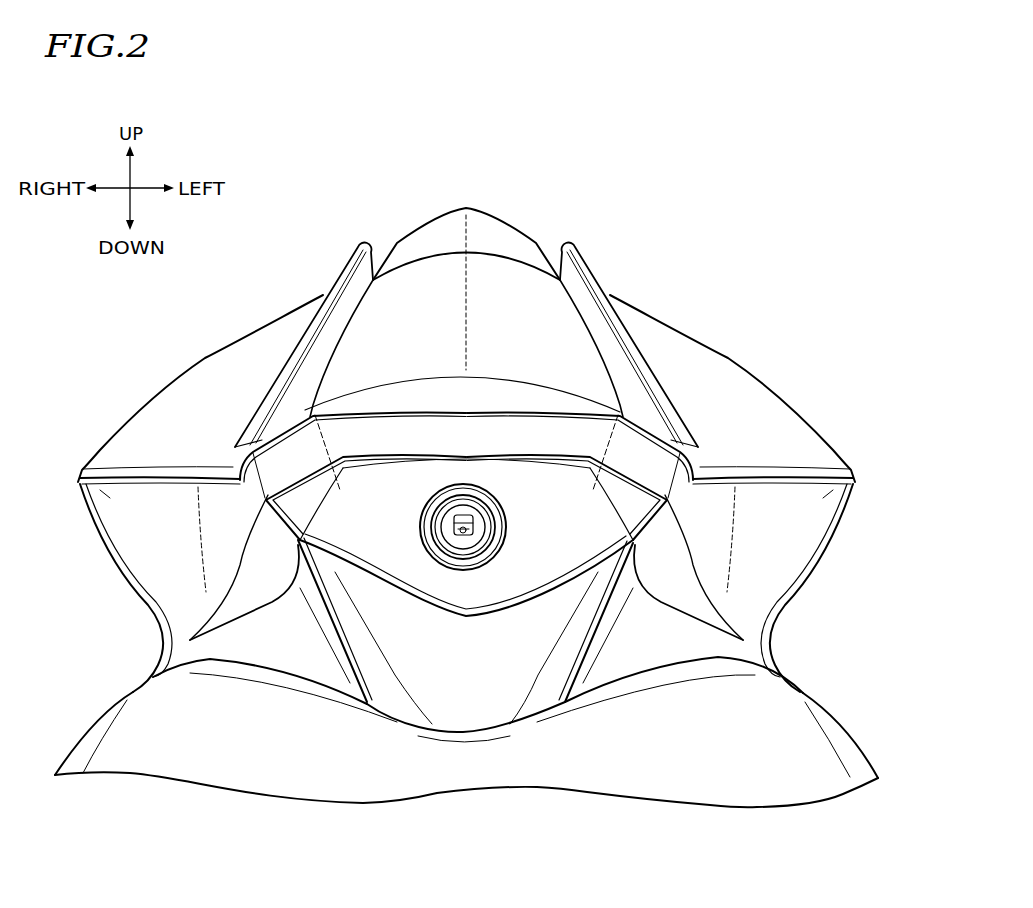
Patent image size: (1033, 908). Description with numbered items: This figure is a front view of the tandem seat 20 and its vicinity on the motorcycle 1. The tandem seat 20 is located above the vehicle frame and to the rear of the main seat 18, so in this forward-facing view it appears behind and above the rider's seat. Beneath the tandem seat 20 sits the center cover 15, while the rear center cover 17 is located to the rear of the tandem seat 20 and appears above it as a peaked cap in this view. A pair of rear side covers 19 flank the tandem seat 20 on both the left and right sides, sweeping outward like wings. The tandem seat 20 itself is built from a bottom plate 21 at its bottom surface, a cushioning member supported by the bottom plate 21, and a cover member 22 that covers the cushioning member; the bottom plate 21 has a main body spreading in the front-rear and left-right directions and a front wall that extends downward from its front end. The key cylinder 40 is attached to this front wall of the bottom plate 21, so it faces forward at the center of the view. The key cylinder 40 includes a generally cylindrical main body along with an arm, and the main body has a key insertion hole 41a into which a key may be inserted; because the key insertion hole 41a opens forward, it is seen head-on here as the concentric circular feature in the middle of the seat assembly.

The motorcycle 1 is at (714, 228).
The center cover 15 is at (502, 687).
The rear center cover 17 is at (452, 230).
The main seat 18 is at (615, 772).
The rear side covers 19 is at (203, 387).
The tandem seat 20 is at (589, 153).
The bottom plate 21 is at (537, 528).
The cover member 22 is at (493, 313).
The key cylinder 40 is at (472, 668).
The key insertion hole 41a is at (458, 538).